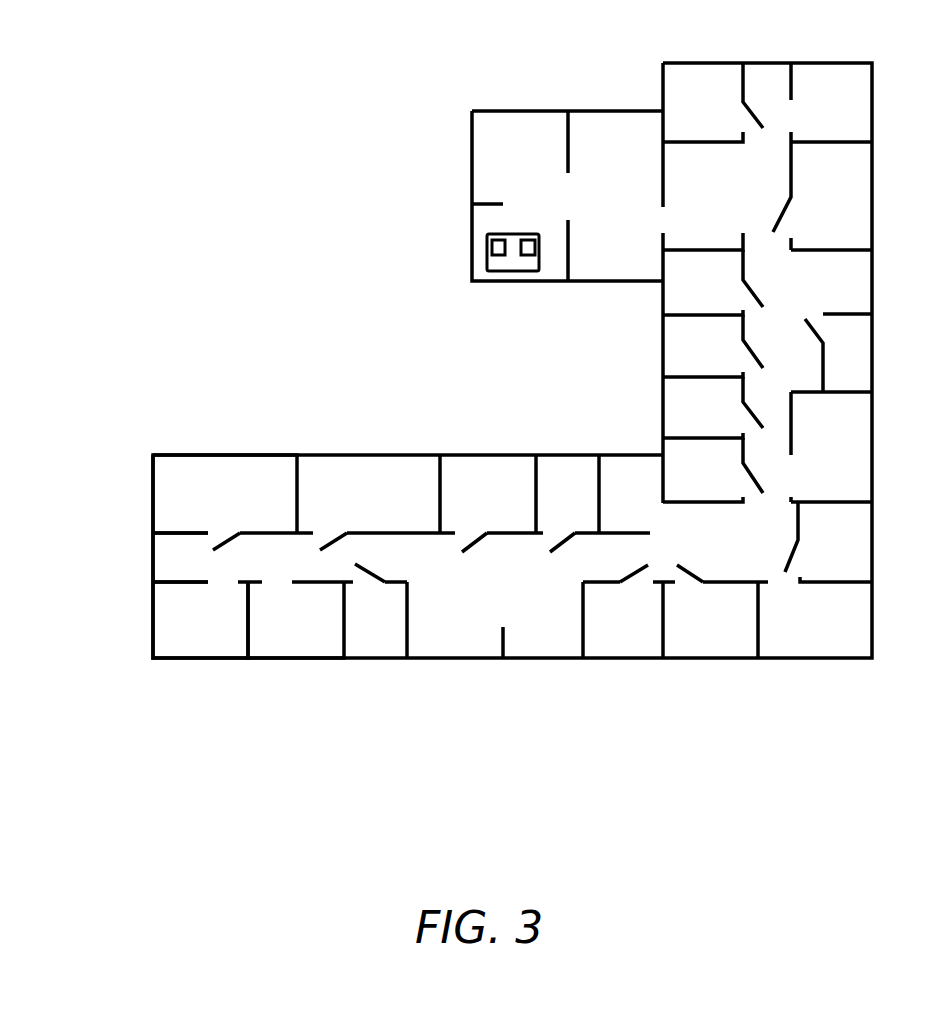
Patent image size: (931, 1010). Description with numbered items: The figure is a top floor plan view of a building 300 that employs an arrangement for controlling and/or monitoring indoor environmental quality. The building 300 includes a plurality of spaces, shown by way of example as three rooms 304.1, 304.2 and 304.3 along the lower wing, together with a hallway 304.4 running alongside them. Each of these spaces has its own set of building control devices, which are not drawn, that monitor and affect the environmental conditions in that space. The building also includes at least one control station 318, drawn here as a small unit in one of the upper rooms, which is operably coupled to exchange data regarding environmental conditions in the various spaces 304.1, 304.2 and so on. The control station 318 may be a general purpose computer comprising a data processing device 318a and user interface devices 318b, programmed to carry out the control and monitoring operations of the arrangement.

The building 300 is at (232, 112).
The room 304.1 is at (237, 639).
The room 304.2 is at (332, 639).
The room 304.3 is at (257, 506).
The hallway 304.4 is at (165, 559).
The control station 318 is at (503, 271).
The data processing device 318a is at (492, 248).
The user interface devices 318b is at (528, 255).